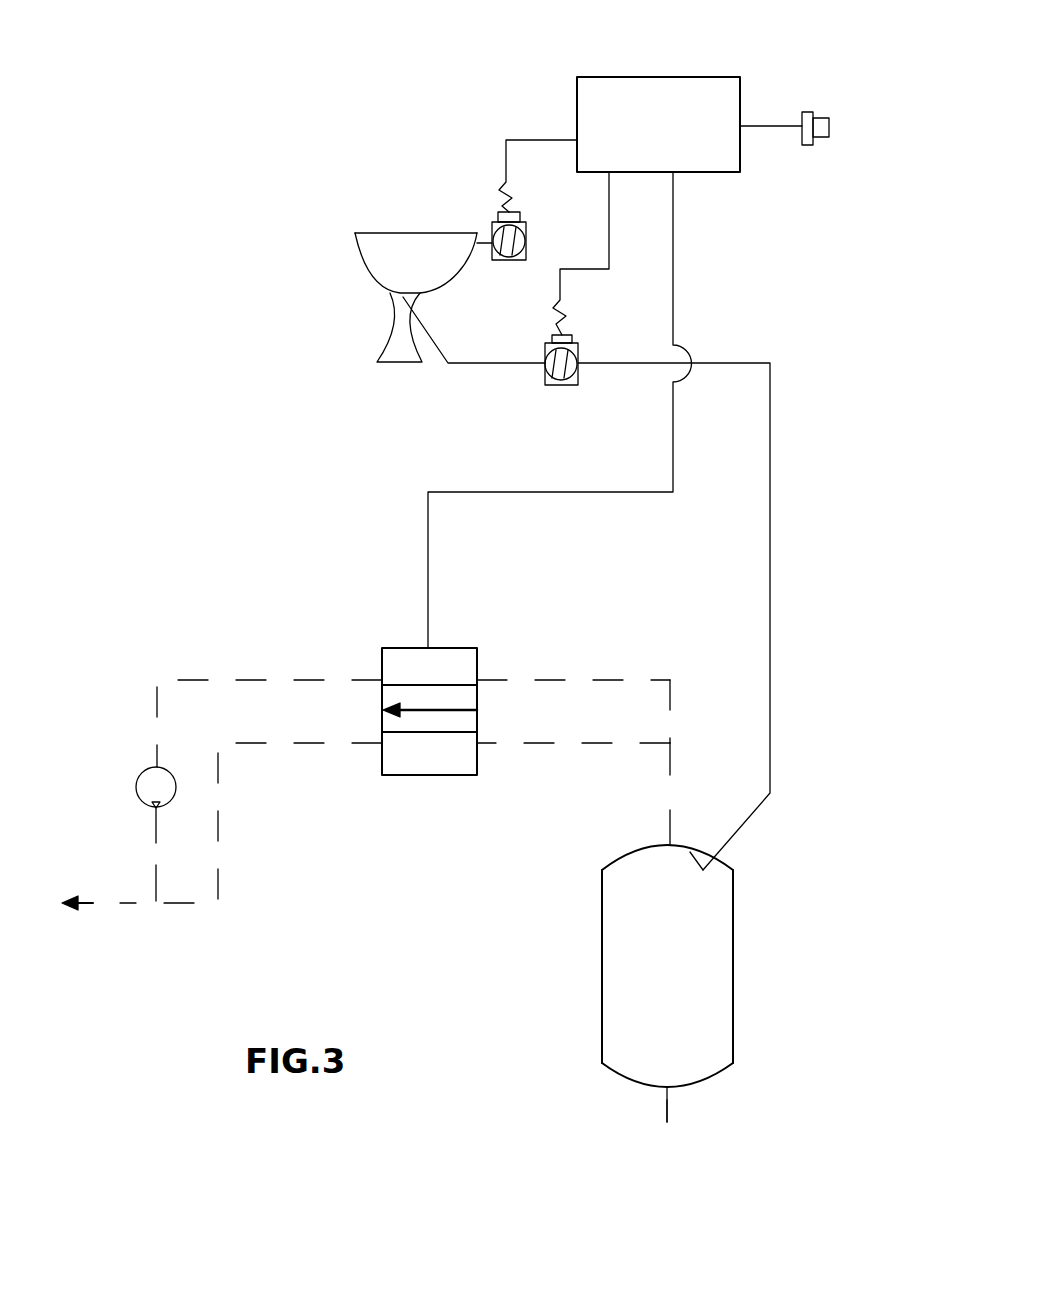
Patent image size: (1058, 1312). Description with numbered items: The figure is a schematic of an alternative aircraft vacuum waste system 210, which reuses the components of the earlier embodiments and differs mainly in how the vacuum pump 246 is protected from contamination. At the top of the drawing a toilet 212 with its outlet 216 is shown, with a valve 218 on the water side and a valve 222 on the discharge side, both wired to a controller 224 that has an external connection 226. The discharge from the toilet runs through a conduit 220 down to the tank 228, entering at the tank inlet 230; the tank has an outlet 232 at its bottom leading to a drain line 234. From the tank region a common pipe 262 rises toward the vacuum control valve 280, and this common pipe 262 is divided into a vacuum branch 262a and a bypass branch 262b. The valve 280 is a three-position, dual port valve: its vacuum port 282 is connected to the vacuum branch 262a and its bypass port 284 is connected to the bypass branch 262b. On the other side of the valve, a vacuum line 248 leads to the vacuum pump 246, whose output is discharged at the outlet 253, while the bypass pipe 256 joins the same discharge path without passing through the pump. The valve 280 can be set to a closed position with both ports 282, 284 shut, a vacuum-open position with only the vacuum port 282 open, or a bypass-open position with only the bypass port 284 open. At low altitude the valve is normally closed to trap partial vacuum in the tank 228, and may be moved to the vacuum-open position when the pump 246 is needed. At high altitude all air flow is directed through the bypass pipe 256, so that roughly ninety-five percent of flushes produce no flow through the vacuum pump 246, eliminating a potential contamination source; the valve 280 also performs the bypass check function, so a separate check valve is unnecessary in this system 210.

The vacuum waste system 210 is at (183, 436).
The toilet 212 is at (383, 247).
The toilet outlet 216 is at (403, 297).
The water supply valve 218 is at (503, 262).
The conduit 220 is at (770, 468).
The discharge valve 222 is at (547, 386).
The controller 224 is at (672, 90).
The power connector 226 is at (822, 118).
The tank 228 is at (733, 978).
The tank inlet 230 is at (710, 857).
The tank outlet 232 is at (667, 1088).
The drain line 234 is at (660, 1110).
The vacuum pump 246 is at (138, 787).
The pump supply line 248 is at (180, 677).
The discharge outlet 253 is at (93, 903).
The bypass pipe 256 is at (240, 742).
The common pipe 262 is at (670, 810).
The vacuum branch 262a is at (637, 678).
The bypass branch 262b is at (570, 745).
The vacuum control valve 280 is at (420, 778).
The vacuum port 282 is at (480, 678).
The bypass port 284 is at (477, 745).